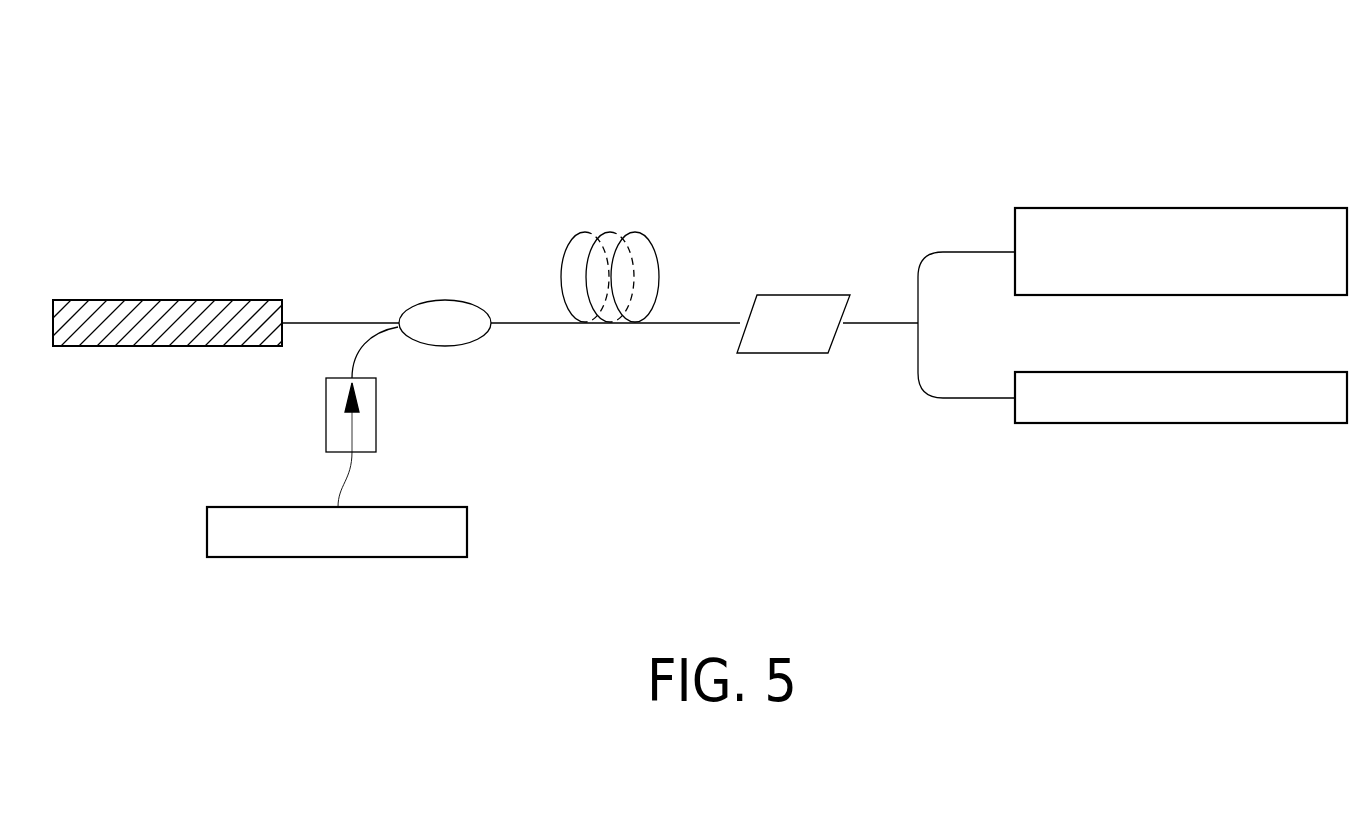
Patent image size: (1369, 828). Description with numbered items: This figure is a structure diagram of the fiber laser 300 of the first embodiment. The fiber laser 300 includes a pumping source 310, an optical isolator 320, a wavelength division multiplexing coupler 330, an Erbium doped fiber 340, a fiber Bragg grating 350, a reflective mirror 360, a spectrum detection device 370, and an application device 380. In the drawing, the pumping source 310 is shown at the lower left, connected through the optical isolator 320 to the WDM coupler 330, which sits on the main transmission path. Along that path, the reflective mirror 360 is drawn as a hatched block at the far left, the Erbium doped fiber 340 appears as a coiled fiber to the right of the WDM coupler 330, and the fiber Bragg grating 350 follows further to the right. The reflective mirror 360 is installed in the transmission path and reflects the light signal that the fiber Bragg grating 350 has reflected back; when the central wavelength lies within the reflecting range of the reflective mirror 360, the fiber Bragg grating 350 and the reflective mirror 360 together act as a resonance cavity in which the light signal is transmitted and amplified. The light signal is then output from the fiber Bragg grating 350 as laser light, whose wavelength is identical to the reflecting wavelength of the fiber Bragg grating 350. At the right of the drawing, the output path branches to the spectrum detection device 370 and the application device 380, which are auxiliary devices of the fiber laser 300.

The fiber laser 300 is at (125, 91).
The pumping source 310 is at (467, 522).
The optical isolator 320 is at (376, 413).
The wavelength division multiplexing (WDM) coupler 330 is at (443, 300).
The Erbium doped fiber 340 is at (609, 232).
The fiber Bragg grating 350 is at (802, 293).
The reflective mirror 360 is at (167, 300).
The spectrum detection device 370 is at (1180, 207).
The application device 380 is at (1180, 423).